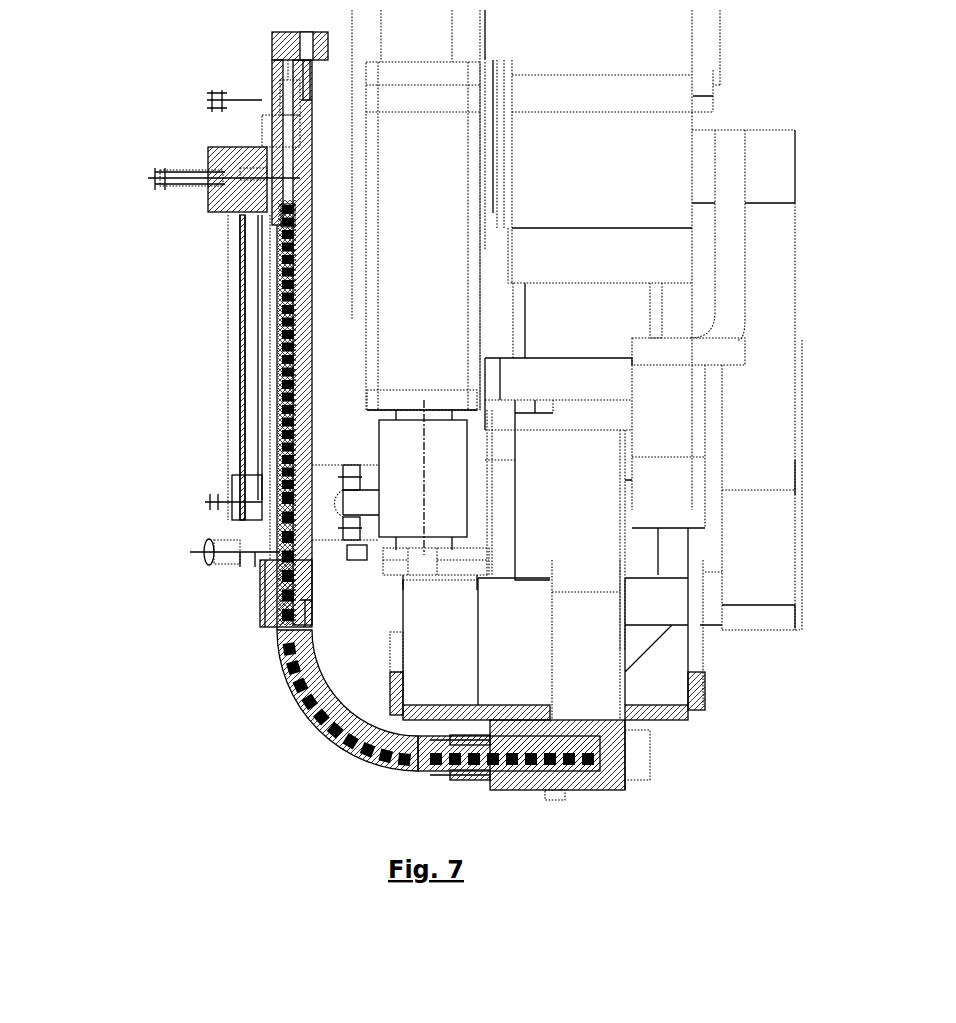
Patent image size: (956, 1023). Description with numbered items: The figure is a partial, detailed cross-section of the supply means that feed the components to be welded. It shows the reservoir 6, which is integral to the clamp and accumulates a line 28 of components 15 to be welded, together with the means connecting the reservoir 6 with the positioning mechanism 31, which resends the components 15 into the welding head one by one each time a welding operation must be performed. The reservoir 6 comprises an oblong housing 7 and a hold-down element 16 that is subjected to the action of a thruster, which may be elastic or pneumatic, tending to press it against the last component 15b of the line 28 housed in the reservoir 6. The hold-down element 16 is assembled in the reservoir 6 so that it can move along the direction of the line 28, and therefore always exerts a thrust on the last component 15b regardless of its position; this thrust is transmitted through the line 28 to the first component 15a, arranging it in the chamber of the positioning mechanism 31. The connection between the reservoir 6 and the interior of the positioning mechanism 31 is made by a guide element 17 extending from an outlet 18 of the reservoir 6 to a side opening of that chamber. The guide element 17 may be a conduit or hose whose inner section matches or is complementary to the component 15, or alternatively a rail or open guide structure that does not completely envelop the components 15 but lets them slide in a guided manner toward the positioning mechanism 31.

The oblong housing 7 is at (285, 152).
The hold-down element 16 is at (215, 177).
The last component to be welded 15b is at (285, 205).
The reservoir 6 is at (272, 330).
The components to be welded 15 is at (284, 410).
The outlet of the reservoir 18 is at (265, 612).
The line of components 28 is at (302, 690).
The guide element 17 is at (328, 730).
The first component of the line 15a is at (590, 765).
The positioning mechanism 31 is at (612, 750).